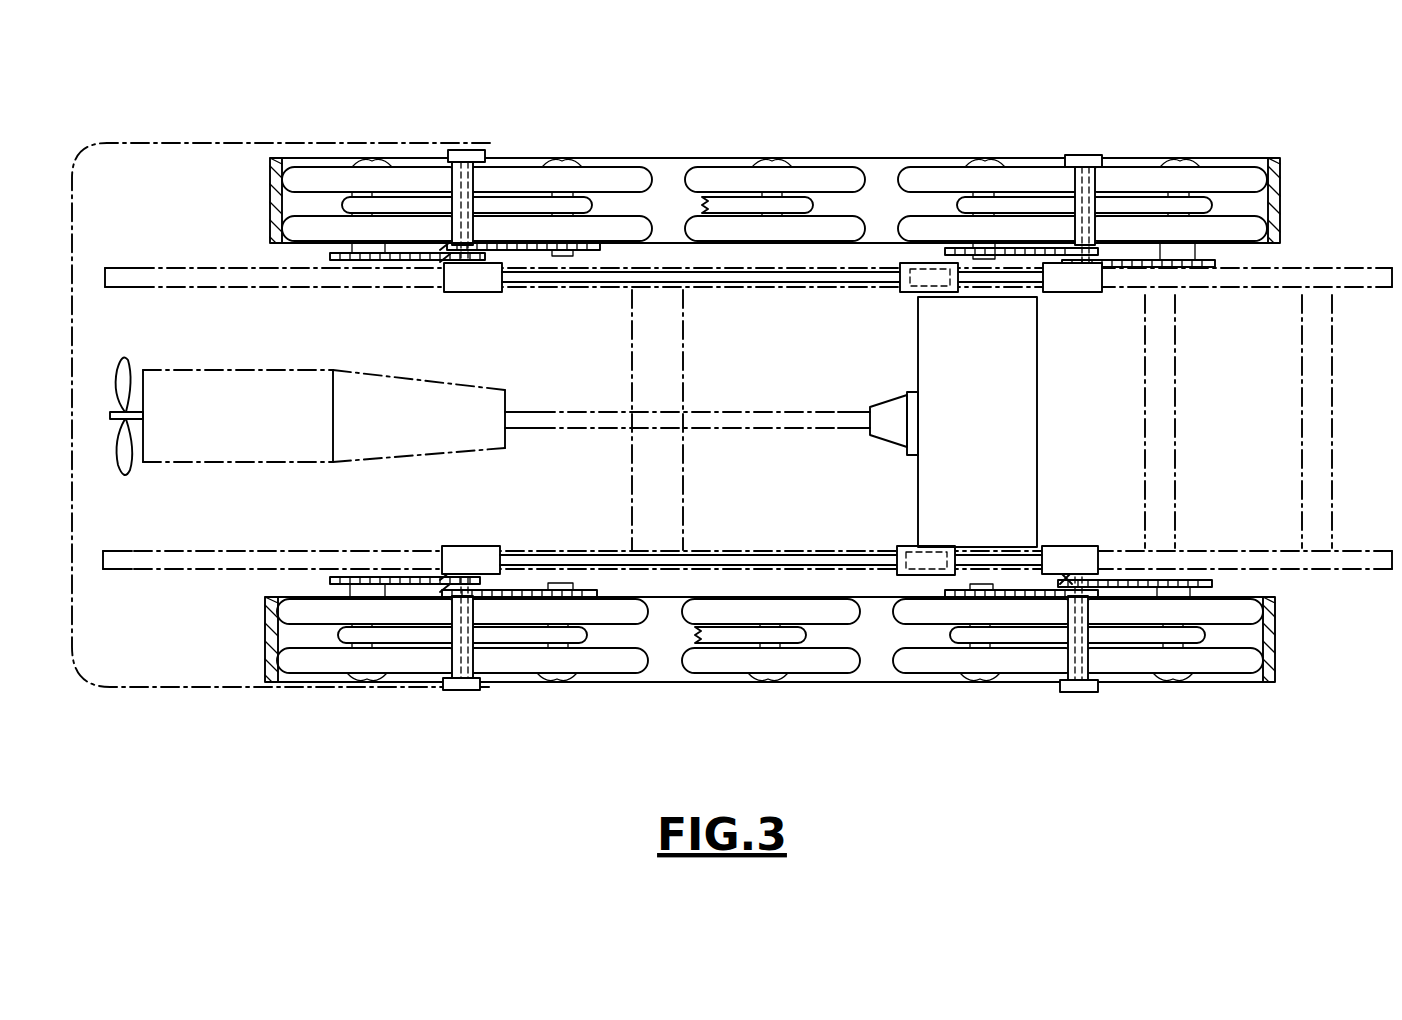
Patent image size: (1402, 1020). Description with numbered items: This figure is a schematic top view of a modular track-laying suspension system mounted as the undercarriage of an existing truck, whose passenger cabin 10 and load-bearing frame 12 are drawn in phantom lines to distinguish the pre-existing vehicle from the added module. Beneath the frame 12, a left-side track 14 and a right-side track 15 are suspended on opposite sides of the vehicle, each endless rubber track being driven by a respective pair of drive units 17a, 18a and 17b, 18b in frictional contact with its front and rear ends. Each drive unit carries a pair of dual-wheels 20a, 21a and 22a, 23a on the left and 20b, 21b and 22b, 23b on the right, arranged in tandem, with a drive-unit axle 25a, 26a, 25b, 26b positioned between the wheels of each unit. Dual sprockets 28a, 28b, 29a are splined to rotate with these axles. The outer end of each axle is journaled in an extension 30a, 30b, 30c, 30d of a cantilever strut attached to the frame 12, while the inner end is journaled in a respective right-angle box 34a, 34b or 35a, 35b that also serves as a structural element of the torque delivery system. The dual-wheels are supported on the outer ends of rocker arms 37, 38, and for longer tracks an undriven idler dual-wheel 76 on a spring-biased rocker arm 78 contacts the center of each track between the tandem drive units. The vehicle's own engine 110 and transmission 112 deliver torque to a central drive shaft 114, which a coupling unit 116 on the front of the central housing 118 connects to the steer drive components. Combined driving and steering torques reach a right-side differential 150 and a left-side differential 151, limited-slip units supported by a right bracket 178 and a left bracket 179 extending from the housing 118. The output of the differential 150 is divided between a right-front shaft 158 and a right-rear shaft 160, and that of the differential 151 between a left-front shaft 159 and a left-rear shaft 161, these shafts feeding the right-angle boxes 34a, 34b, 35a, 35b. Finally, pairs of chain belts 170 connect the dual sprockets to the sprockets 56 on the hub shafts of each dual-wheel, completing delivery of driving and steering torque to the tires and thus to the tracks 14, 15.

The passenger cabin 10 is at (145, 170).
The load-bearing frame 12 is at (137, 280).
The left-side track 14 is at (266, 642).
The right-side track 15 is at (1276, 208).
The drive unit 17a is at (447, 671).
The drive unit 17b is at (1089, 177).
The drive unit 18a is at (1168, 712).
The drive unit 18b is at (432, 98).
The dual-wheel 20a is at (338, 663).
The dual-wheel 20b is at (1213, 182).
The dual-wheel 21a is at (569, 665).
The dual-wheel 21b is at (930, 180).
The dual-wheel 22a is at (1232, 665).
The dual-wheel 22b is at (332, 178).
The dual-wheel 23a is at (910, 660).
The dual-wheel 23b is at (610, 182).
The drive-unit axle 25a is at (466, 675).
The drive-unit axle 25b is at (1092, 178).
The drive-unit axle 26a is at (1080, 675).
The drive-unit axle 26b is at (470, 178).
The dual sprocket 28a is at (446, 555).
The dual sprocket 28b is at (442, 253).
The dual sprocket 29a is at (1066, 580).
The strut extension 30a is at (479, 655).
The strut extension 30b is at (505, 184).
The strut extension 30c is at (1095, 651).
The strut extension 30d is at (1089, 193).
The right-angle box 34a is at (470, 553).
The right-angle box 34b is at (1082, 284).
The right-angle box 35a is at (1050, 555).
The right-angle box 35b is at (487, 284).
The rocker arm 37 is at (340, 636).
The rocker arm 38 is at (582, 636).
The sprocket 56 is at (378, 575).
The idler dual-wheel 76 is at (771, 646).
The rocker arm 78 is at (795, 640).
The engine 110 is at (221, 416).
The transmission 112 is at (432, 430).
The central drive shaft 114 is at (738, 410).
The coupling unit 116 is at (890, 432).
The central housing 118 is at (977, 422).
The right-side differential 150 is at (898, 291).
The left-side differential 151 is at (896, 557).
The right-front shaft 158 is at (748, 283).
The left-front shaft 159 is at (782, 562).
The right-rear shaft 160 is at (1002, 284).
The left-rear shaft 161 is at (1020, 565).
The chain belts 170 is at (355, 258).
The right bracket 178 is at (910, 294).
The left bracket 179 is at (902, 576).